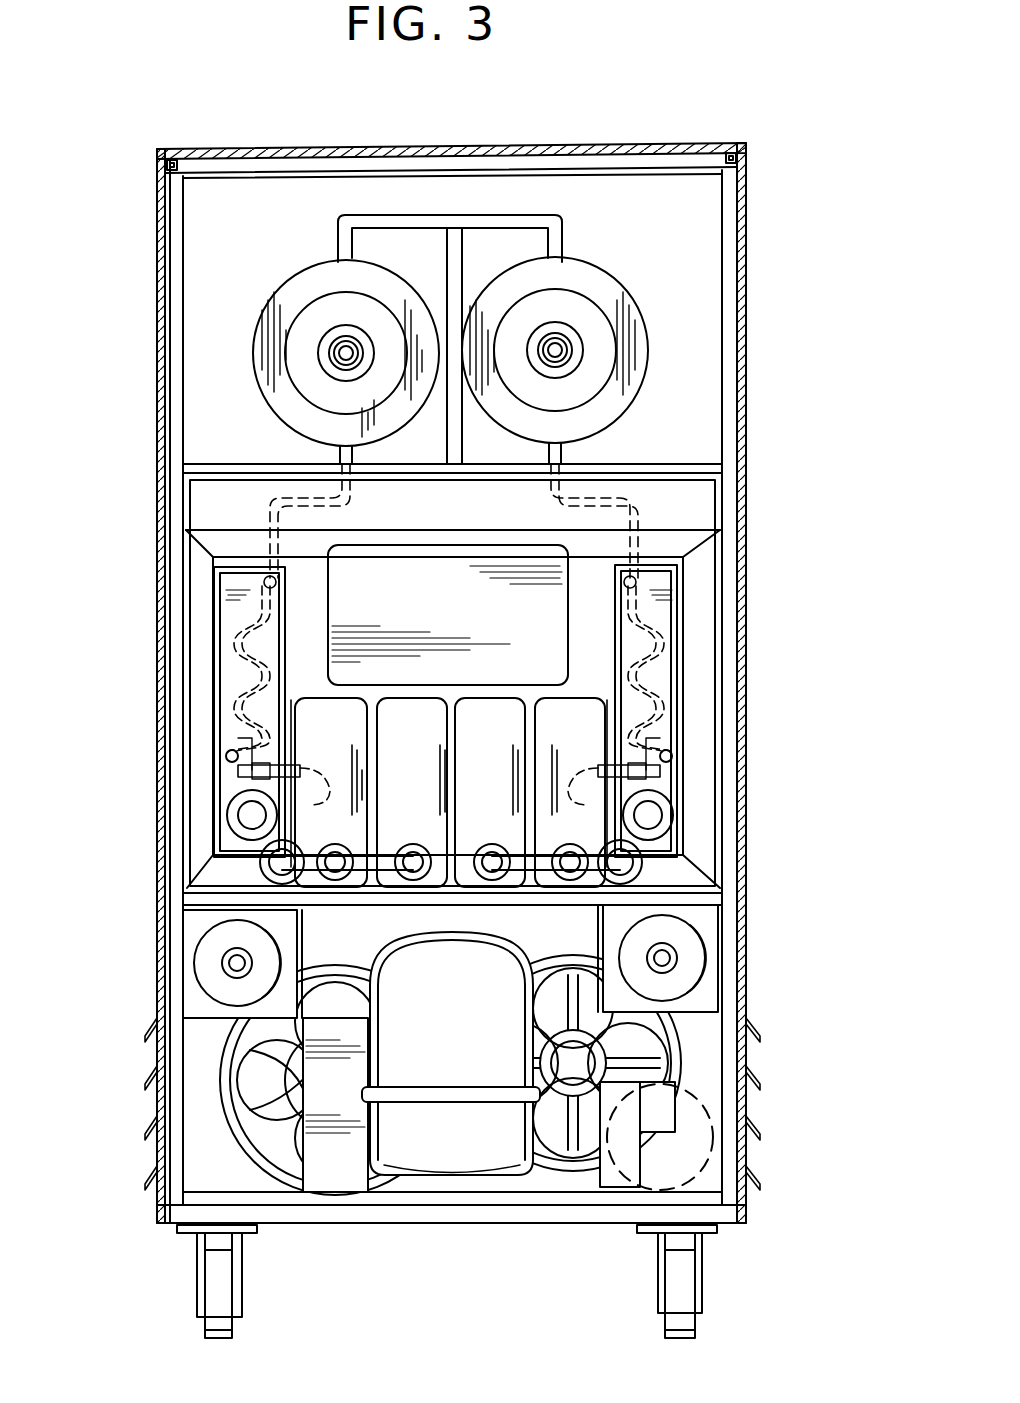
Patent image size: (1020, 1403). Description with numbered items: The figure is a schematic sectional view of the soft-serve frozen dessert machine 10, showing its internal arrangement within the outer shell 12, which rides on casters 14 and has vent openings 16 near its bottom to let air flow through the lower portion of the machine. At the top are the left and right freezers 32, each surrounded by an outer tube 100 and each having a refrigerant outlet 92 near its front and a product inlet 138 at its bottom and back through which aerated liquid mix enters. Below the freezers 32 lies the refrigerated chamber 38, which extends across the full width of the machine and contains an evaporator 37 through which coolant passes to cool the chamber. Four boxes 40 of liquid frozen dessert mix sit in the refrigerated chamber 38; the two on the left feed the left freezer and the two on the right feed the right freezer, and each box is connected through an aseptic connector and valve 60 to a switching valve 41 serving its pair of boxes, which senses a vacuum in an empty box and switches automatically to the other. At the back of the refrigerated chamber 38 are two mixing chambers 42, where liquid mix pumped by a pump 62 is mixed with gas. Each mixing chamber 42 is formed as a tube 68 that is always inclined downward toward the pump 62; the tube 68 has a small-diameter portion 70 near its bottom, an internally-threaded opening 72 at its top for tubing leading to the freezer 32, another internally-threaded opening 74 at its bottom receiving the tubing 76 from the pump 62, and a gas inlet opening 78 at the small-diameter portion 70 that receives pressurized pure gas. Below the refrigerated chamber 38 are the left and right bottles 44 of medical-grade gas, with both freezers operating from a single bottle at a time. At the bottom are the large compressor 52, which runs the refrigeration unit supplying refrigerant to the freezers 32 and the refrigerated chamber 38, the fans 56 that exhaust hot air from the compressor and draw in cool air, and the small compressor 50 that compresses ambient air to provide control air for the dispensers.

The soft-serve frozen dessert machine 10 is at (600, 112).
The outer shell 12 is at (258, 147).
The casters 14 is at (236, 1336).
The vent openings 16 is at (756, 1036).
The freezers 32 is at (299, 288).
The evaporator 37 is at (447, 604).
The refrigerated chamber 38 is at (707, 496).
The boxes of liquid frozen dessert mix 40 is at (346, 729).
The switching valve 41 is at (266, 868).
The mixing chambers 42 is at (278, 636).
The bottles of medical-grade bottled gas 44 is at (208, 958).
The small compressor 50 is at (690, 1148).
The large compressor 52 is at (467, 1011).
The fans 56 is at (342, 964).
The aseptic connector and valve 60 is at (342, 845).
The pump 62 is at (246, 812).
The mixing chamber tube 68 is at (226, 600).
The small-diameter portion 70 is at (224, 740).
The internally-threaded opening 72 is at (262, 588).
The internally-threaded opening 74 is at (280, 712).
The tubing 76 is at (352, 770).
The gas inlet opening 78 is at (228, 762).
The refrigerant outlet 92 is at (336, 258).
The outer tube 100 is at (254, 335).
The product inlet 138 is at (338, 452).